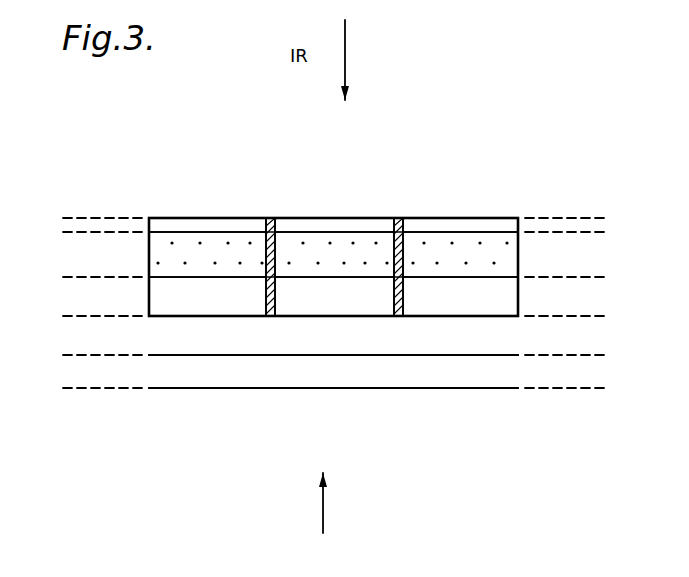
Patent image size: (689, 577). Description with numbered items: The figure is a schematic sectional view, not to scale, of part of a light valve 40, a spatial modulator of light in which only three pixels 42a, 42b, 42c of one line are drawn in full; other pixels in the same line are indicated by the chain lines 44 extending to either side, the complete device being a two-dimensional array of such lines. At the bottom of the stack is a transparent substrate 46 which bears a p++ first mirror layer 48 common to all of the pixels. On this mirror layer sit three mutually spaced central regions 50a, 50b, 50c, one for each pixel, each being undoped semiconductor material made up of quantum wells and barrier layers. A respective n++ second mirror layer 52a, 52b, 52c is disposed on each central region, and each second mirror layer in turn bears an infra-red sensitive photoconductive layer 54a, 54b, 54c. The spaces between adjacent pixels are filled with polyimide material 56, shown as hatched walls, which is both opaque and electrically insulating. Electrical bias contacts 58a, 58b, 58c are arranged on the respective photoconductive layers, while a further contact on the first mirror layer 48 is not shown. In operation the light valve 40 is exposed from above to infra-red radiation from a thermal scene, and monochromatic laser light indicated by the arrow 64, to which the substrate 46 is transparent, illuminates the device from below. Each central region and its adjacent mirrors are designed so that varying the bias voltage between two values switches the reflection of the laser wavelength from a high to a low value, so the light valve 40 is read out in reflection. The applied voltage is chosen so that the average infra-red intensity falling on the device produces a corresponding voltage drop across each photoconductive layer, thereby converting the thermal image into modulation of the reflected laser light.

The light valve 40 is at (118, 397).
The first pixel 42a is at (168, 217).
The second pixel 42b is at (294, 217).
The third pixel 42c is at (431, 217).
The chain lines 44 is at (76, 278).
The transparent substrate 46 is at (337, 378).
The first mirror layer 48 is at (375, 343).
The first central region 50a is at (175, 306).
The second central region 50b is at (310, 306).
The third central region 50c is at (432, 306).
The first second mirror layer 52a is at (237, 247).
The second second mirror layer 52b is at (366, 236).
The third second mirror layer 52c is at (492, 238).
The first photoconductive layer 54a is at (200, 217).
The second photoconductive layer 54b is at (320, 217).
The third photoconductive layer 54c is at (452, 217).
The polyimide material 56 is at (268, 217).
The first electrical bias contact 58a is at (216, 217).
The second electrical bias contact 58b is at (350, 217).
The third electrical bias contact 58c is at (475, 217).
The arrow indicating laser light 64 is at (345, 53).